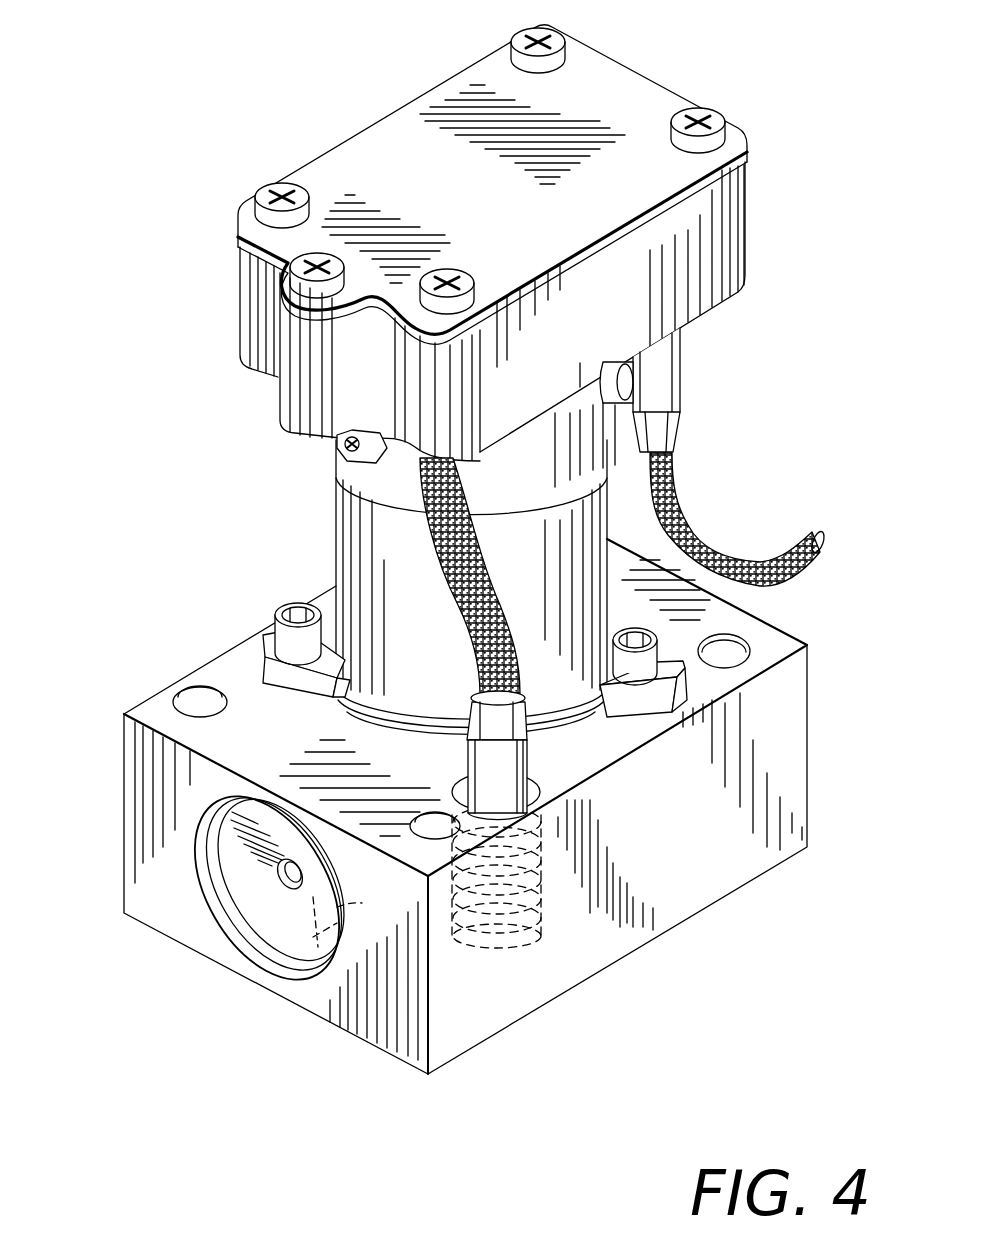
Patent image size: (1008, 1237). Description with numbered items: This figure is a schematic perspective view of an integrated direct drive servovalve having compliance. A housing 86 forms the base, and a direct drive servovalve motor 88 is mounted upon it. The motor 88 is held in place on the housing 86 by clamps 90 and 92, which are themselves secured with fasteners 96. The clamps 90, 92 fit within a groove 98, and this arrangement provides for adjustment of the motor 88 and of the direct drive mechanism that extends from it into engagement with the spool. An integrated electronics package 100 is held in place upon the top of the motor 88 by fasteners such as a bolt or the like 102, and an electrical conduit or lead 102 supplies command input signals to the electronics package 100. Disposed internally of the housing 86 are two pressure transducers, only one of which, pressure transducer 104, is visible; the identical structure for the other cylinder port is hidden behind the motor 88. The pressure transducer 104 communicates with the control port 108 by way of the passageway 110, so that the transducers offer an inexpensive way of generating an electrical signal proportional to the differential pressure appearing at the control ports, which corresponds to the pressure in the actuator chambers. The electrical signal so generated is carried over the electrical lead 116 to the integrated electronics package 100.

The housing 86 is at (138, 750).
The direct drive servovalve motor 88 is at (350, 540).
The clamp 90 is at (273, 670).
The clamp 92 is at (647, 707).
The fastener 96 is at (275, 618).
The groove 98 is at (372, 712).
The integrated electronics package 100 is at (372, 180).
The electrical conduit or lead 102 is at (330, 452).
The pressure transducer 104 is at (513, 948).
The control port 108 is at (356, 943).
The passageway 110 is at (440, 925).
The electrical lead 116 is at (478, 620).